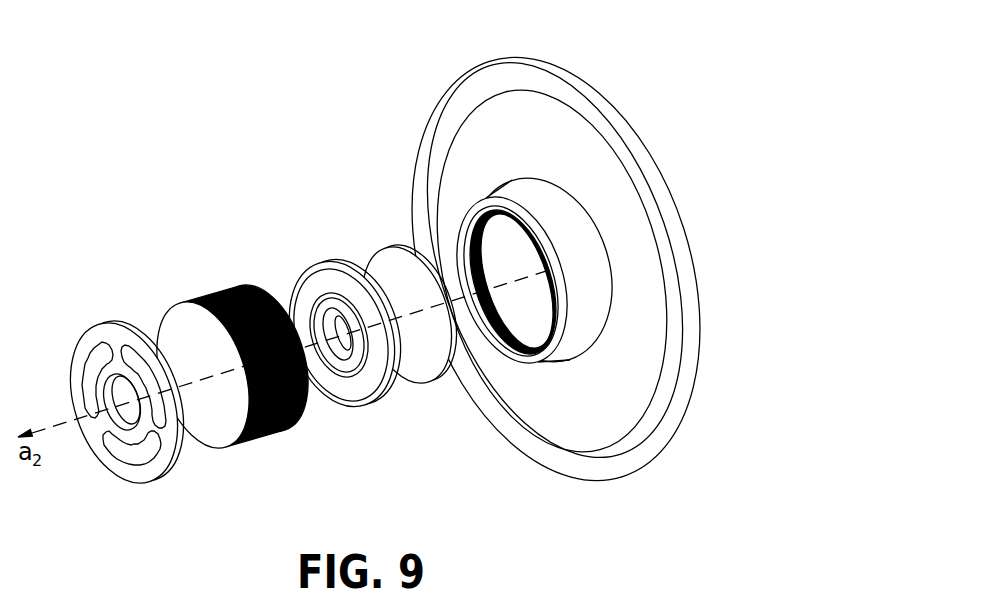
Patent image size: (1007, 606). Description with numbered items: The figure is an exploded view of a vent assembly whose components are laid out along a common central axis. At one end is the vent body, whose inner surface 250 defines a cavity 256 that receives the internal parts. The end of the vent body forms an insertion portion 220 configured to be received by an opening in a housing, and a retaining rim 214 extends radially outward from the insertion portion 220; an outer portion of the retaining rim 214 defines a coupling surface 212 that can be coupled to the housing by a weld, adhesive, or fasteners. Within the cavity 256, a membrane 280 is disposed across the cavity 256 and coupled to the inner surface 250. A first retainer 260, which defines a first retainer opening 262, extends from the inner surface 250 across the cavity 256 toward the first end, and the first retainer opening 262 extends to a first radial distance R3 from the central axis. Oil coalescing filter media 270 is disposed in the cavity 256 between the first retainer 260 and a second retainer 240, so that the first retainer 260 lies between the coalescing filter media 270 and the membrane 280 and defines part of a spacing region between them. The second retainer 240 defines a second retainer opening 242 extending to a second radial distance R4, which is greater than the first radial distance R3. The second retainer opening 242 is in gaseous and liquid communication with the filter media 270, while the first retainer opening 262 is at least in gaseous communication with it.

The coupling surface 212 is at (455, 95).
The retaining rim 214 is at (455, 148).
The insertion portion 220 is at (582, 333).
The inner surface 250 is at (538, 325).
The cavity 256 is at (477, 237).
The membrane 280 is at (427, 360).
The first retainer 260 is at (370, 400).
The first retainer opening 262 is at (340, 334).
The oil coalescing filter media 270 is at (222, 295).
The second retainer 240 is at (157, 450).
The second retainer opening 242 is at (130, 443).
The first radial distance R3 is at (356, 305).
The second radial distance R4 is at (123, 336).